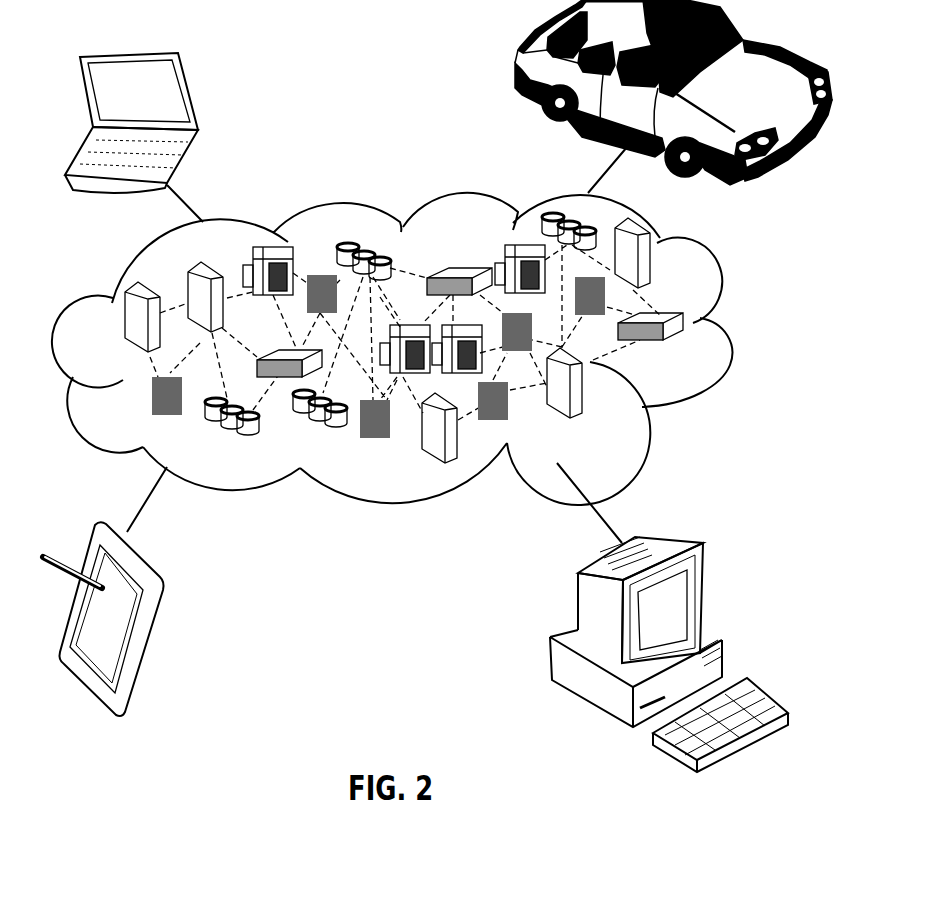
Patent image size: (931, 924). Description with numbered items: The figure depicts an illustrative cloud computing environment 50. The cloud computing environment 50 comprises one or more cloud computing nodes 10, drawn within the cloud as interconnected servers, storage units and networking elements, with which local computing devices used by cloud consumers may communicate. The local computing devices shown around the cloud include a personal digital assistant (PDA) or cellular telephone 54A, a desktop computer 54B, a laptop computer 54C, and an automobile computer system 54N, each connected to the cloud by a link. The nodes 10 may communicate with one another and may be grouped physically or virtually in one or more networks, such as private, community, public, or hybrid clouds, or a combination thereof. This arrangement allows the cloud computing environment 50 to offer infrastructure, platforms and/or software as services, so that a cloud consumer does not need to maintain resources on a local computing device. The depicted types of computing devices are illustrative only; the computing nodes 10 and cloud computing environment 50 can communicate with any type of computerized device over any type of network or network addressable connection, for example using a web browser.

The personal digital assistant (PDA) or cellular telephone 54A is at (158, 612).
The desktop computer 54B is at (672, 538).
The laptop computer 54C is at (192, 92).
The automobile computer system 54N is at (517, 63).
The cloud computing environment 50 is at (733, 328).
The cloud computing node 10 is at (690, 352).